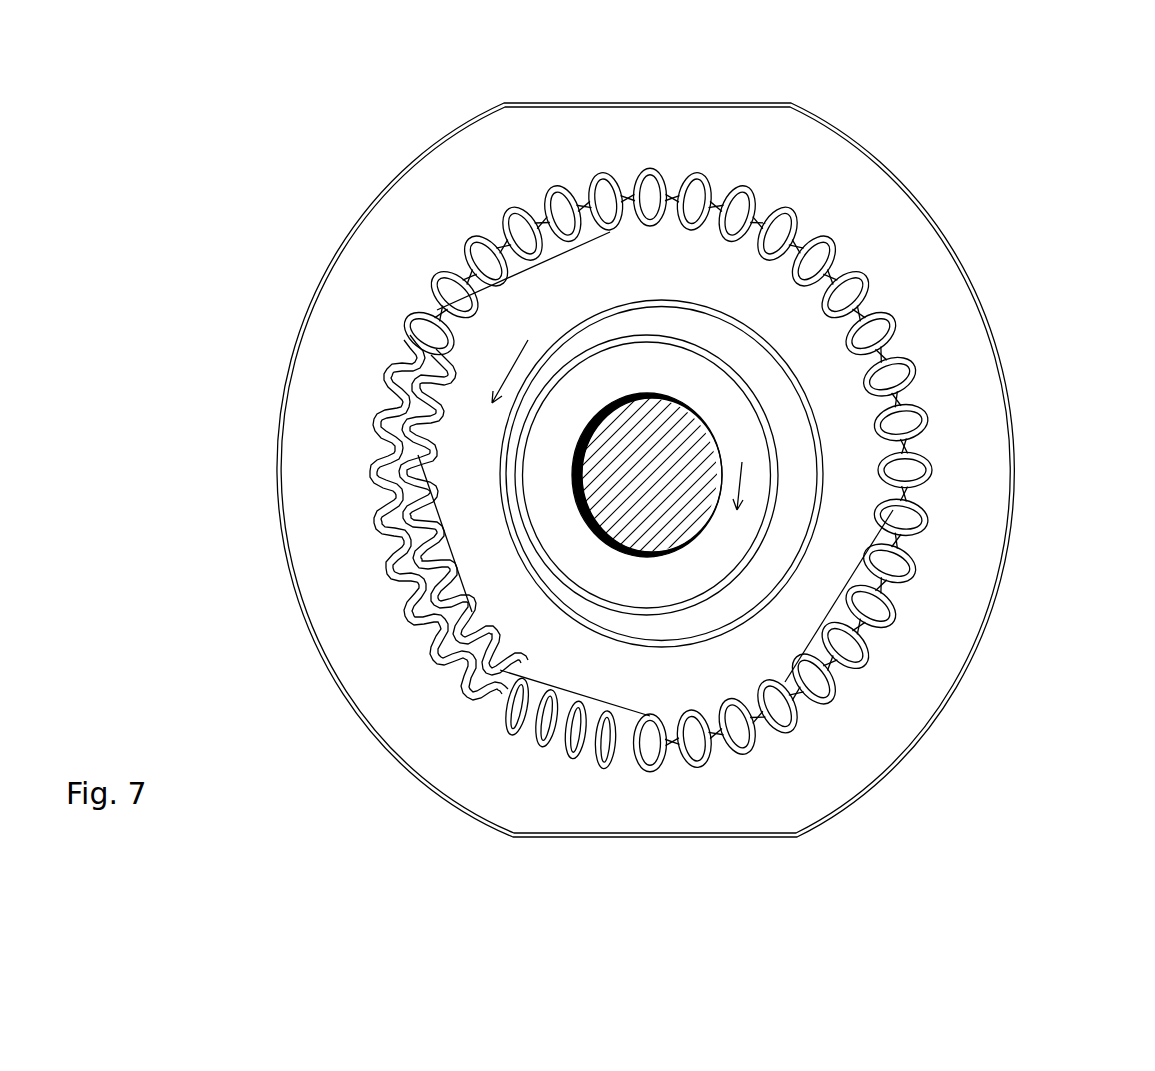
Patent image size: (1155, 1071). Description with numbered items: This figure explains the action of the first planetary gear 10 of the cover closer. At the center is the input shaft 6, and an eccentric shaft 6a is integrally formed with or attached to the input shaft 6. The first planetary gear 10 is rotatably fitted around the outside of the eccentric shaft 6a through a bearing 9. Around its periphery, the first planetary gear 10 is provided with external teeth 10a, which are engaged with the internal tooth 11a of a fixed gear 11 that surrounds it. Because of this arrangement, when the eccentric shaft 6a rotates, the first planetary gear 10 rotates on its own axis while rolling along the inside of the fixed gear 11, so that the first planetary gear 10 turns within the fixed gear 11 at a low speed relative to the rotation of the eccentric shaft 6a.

The input shaft 6 is at (650, 528).
The eccentric shaft 6a is at (795, 468).
The bearing 9 is at (727, 558).
The first planetary gear 10 is at (817, 352).
The external teeth 10a is at (433, 383).
The fixed gear 11 is at (773, 152).
The internal tooth 11a is at (427, 313).